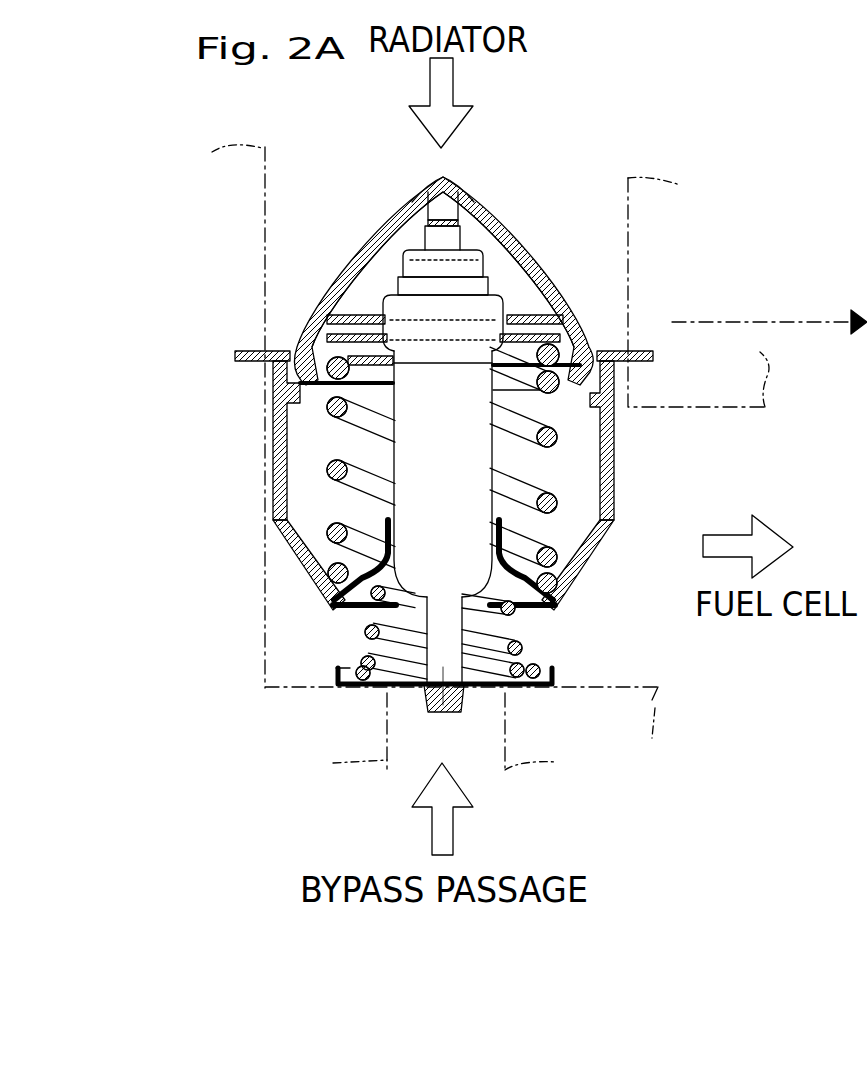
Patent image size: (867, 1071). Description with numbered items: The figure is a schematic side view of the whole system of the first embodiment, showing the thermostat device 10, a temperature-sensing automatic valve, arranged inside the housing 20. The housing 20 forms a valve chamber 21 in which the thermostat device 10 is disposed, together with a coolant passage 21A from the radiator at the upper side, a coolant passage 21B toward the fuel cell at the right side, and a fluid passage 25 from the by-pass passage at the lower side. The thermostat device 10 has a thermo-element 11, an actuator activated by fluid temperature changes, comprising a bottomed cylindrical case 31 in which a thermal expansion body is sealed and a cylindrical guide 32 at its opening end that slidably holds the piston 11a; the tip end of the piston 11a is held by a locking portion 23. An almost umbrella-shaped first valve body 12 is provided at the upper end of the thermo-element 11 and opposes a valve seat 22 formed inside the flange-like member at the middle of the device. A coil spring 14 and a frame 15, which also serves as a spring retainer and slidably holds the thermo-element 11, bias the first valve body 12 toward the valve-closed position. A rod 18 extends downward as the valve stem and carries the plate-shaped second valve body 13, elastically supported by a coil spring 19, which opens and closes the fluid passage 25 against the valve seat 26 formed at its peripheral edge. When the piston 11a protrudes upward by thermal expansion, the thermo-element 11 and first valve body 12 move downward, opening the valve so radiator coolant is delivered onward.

The thermostat device 10 is at (588, 170).
The thermo-element 11 is at (490, 462).
The piston 11a is at (450, 205).
The first valve body 12 is at (542, 303).
The second valve body 13 is at (545, 693).
The coil spring 14 is at (557, 441).
The frame 15 is at (597, 553).
The rod 18 is at (445, 718).
The coil spring 19 is at (525, 647).
The housing 20 is at (272, 445).
The valve chamber 21 is at (267, 613).
The coolant passage (first passage) 21A is at (267, 167).
The coolant passage (second passage) 21B is at (634, 687).
The valve seat 22 is at (340, 300).
The locking portion 23 is at (427, 183).
The fluid passage 25 is at (388, 733).
The valve seat 26 is at (347, 672).
The bottomed cylindrical case 31 is at (487, 312).
The cylindrical guide 32 is at (468, 267).